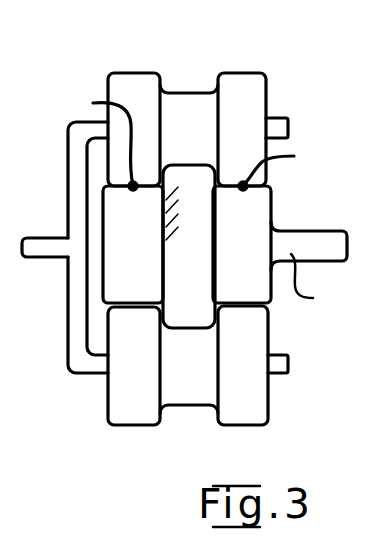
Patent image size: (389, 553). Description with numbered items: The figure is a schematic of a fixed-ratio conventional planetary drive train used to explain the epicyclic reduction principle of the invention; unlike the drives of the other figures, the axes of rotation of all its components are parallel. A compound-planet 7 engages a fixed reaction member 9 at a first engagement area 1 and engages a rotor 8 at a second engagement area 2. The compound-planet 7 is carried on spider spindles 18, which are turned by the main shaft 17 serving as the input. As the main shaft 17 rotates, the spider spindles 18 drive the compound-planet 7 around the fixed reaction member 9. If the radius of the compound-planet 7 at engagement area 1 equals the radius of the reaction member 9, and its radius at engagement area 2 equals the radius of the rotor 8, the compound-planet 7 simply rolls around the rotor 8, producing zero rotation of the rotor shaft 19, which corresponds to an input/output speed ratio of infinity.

The engagement area 1 is at (121, 195).
The engagement area 2 is at (274, 165).
The compound-planet 7 is at (190, 103).
The rotor 8 is at (266, 216).
The reaction member 9 is at (158, 292).
The main shaft 17 is at (47, 250).
The spider spindles 18 is at (272, 121).
The rotor shaft 19 is at (312, 283).